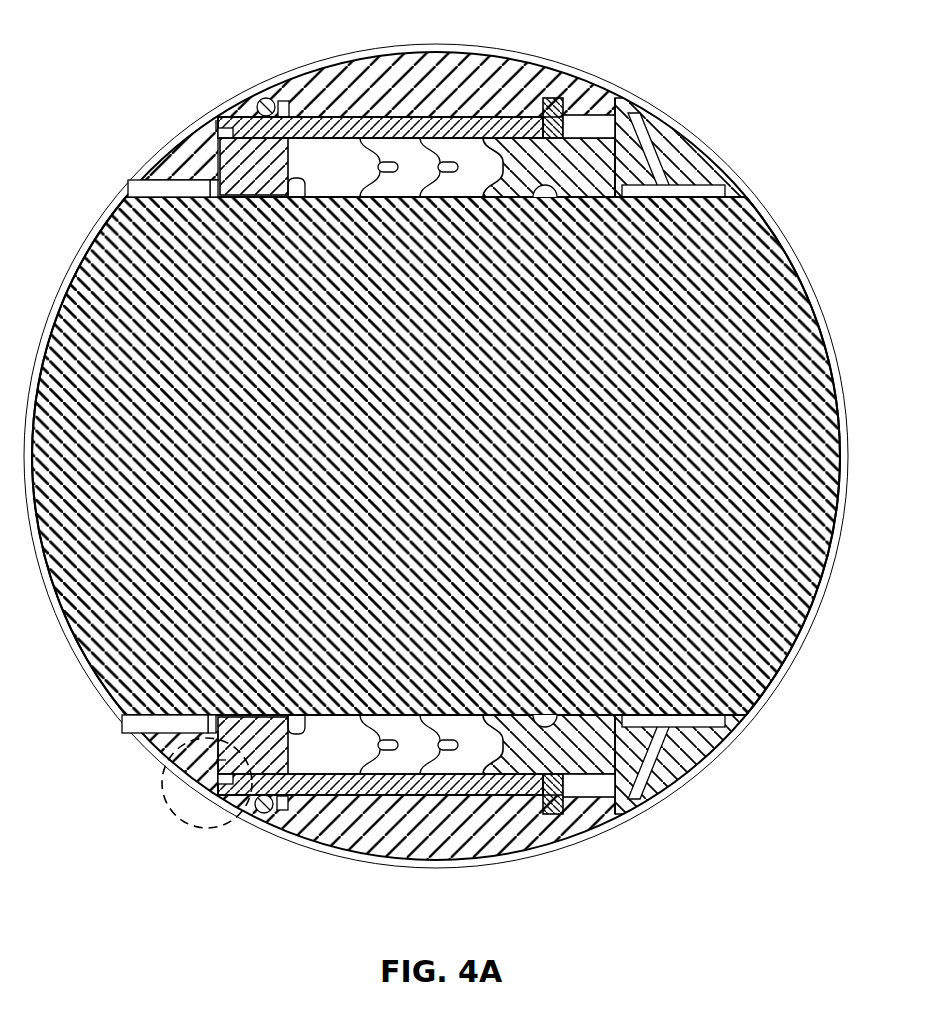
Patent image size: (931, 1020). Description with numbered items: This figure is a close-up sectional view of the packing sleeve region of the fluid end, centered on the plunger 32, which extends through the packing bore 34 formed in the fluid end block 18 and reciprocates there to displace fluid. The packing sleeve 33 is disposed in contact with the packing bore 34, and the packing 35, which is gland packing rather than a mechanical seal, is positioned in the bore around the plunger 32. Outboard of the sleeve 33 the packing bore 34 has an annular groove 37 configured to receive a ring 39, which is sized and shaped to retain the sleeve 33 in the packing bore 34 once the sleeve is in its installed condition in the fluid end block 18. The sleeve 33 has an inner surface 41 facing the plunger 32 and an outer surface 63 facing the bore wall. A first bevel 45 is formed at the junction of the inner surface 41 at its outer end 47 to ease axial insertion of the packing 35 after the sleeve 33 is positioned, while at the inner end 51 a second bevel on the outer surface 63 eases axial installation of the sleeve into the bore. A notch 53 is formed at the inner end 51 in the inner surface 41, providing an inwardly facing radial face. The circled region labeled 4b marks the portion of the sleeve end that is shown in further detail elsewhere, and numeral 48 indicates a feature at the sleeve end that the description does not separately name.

The fluid end block 18 is at (515, 848).
The plunger 32 is at (768, 593).
The packing sleeve 33 is at (230, 782).
The packing bore 34 is at (160, 735).
The packing 35 is at (452, 745).
The annular groove 37 is at (553, 808).
The ring 39 is at (548, 806).
The inner surface 41 is at (262, 145).
The first bevel 45 is at (545, 138).
The outer end 47 is at (552, 116).
The sleeve end 48 is at (222, 117).
The inner end 51 is at (212, 125).
The notch 53 is at (221, 758).
The outer surface 63 is at (350, 115).
The detail region 4b is at (165, 822).